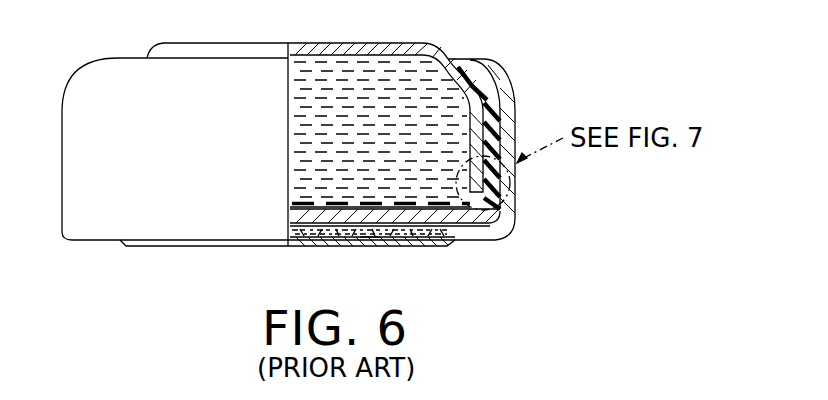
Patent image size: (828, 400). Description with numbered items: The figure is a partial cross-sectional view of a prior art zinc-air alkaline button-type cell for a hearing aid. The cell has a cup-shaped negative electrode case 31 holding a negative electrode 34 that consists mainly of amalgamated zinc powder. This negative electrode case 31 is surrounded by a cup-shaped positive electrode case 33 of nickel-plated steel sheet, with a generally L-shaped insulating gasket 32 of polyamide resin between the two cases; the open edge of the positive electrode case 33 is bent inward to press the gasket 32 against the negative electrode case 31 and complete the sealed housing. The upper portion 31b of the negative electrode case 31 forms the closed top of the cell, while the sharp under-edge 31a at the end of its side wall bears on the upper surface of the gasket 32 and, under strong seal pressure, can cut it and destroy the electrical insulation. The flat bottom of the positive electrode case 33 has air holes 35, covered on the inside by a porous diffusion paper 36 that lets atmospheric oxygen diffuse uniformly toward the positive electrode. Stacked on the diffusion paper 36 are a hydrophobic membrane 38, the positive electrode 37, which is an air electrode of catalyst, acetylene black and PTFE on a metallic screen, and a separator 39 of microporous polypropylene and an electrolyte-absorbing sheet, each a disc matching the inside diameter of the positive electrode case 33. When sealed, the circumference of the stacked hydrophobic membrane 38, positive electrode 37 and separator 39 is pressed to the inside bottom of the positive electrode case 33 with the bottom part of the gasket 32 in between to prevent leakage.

The negative electrode case 31 is at (420, 43).
The sharp under-edge 31a is at (493, 226).
The container top 31b is at (383, 43).
The insulating gasket 32 is at (487, 90).
The positive electrode case 33 is at (316, 243).
The negative electrode 34 is at (343, 108).
The air holes 35 is at (370, 237).
The diffusion paper 36 is at (417, 237).
The positive electrode 37 is at (293, 227).
The hydrophobic membrane 38 is at (290, 207).
The separator 39 is at (290, 192).